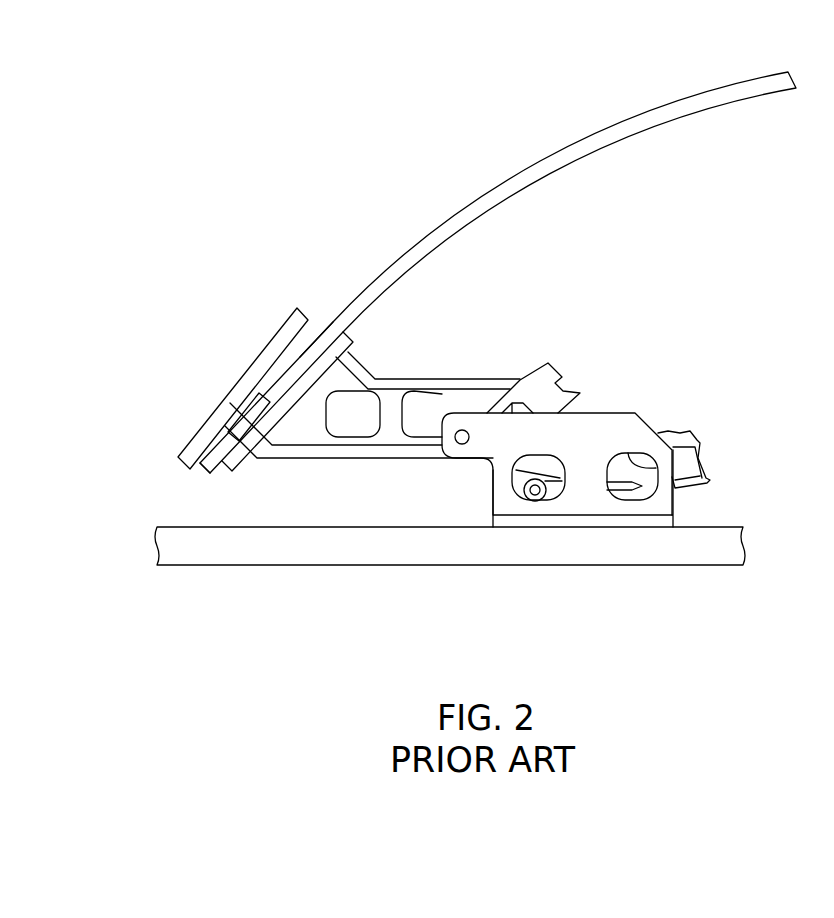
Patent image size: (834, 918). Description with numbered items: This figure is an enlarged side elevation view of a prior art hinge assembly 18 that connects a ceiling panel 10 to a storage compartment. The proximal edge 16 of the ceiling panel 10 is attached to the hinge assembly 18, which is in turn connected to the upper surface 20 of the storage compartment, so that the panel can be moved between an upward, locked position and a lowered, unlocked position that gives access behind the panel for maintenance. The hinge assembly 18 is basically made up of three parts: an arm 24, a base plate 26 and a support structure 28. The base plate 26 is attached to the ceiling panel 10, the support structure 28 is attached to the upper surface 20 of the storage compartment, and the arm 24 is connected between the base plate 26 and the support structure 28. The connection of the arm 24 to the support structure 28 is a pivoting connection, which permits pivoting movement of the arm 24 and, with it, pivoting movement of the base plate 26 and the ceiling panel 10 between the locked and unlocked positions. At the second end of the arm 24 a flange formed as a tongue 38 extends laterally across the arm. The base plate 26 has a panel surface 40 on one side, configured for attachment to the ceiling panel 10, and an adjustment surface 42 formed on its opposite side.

The ceiling panel 10 is at (541, 173).
The proximal edge 16 is at (177, 462).
The hinge assembly 18 is at (641, 345).
The upper surface 20 is at (243, 526).
The arm 24 is at (431, 386).
The base plate 26 is at (340, 347).
The support structure 28 is at (676, 502).
The tongue 38 is at (323, 370).
The panel surface 40 is at (240, 398).
The adjustment surface 42 is at (250, 435).